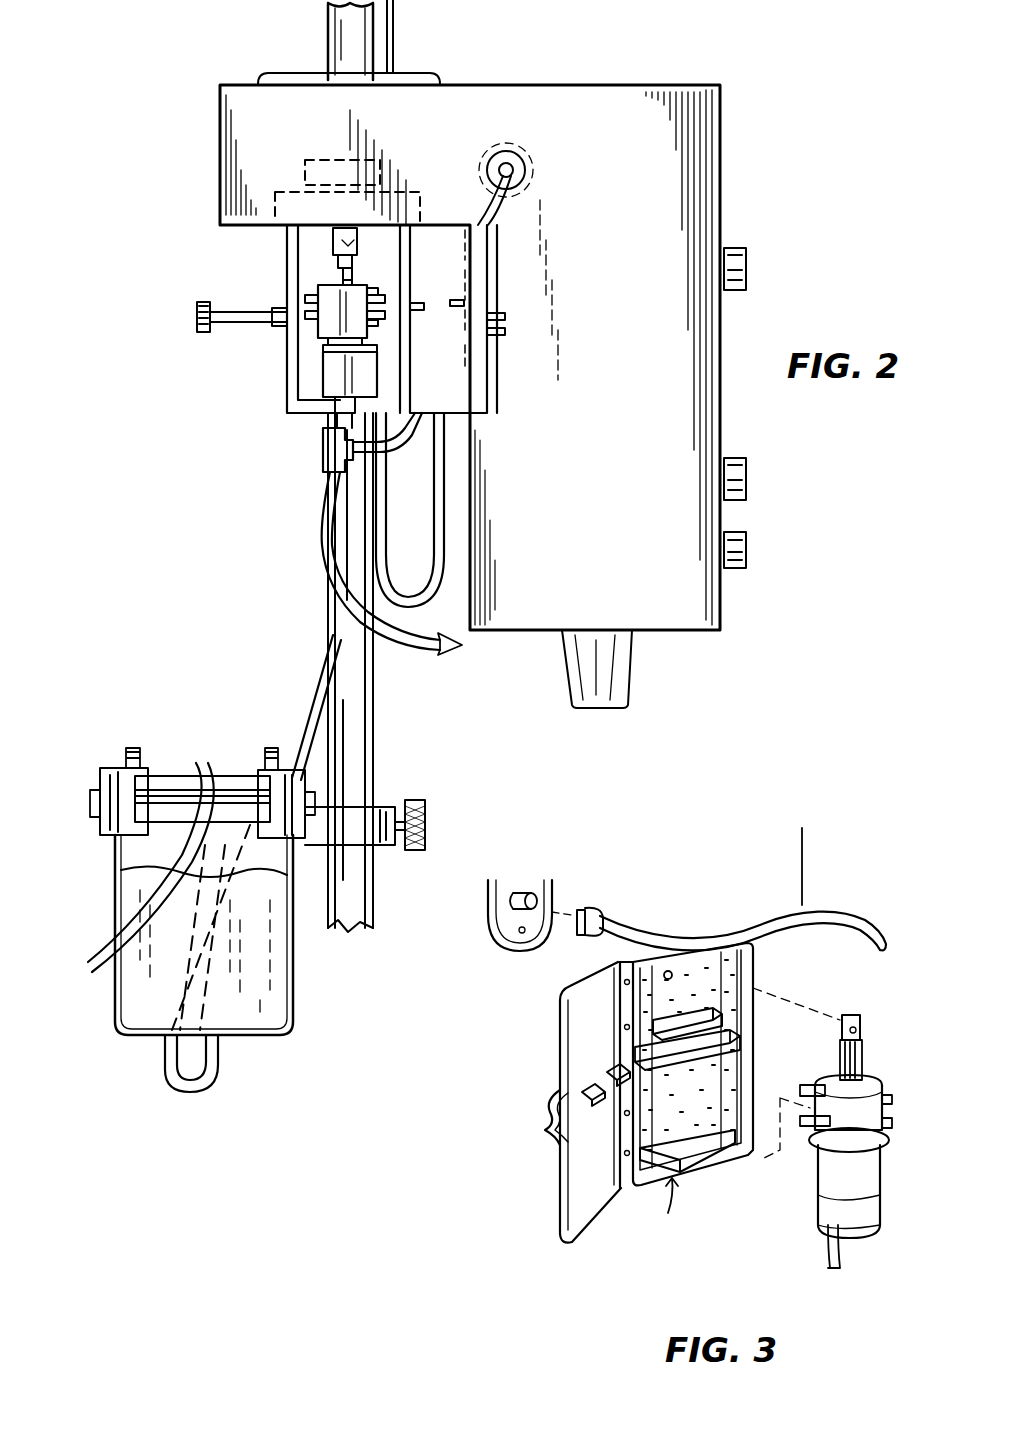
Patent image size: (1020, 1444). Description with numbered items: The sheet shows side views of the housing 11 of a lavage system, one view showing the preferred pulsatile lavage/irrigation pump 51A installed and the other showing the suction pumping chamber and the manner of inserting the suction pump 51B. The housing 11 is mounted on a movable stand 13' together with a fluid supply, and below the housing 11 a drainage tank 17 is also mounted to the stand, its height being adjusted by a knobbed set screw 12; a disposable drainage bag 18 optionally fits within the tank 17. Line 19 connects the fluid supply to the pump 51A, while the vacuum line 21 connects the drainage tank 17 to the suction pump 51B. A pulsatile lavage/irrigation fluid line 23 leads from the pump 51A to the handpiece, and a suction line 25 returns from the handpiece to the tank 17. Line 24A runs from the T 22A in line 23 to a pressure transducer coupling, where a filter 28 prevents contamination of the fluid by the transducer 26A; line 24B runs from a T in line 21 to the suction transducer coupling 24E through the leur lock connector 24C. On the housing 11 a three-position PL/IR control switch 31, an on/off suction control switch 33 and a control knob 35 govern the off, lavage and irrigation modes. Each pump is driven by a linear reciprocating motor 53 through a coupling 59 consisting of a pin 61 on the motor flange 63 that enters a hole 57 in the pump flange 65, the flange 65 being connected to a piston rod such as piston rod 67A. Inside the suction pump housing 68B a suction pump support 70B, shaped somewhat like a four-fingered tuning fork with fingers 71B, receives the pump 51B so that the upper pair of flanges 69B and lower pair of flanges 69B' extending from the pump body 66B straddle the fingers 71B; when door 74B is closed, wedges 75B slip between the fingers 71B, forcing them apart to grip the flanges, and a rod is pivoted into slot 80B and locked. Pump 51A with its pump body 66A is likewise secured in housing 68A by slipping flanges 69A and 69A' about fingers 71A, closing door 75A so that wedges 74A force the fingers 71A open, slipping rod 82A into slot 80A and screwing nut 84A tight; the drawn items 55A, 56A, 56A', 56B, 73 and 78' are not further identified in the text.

In FIG. 2, the housing 11 is at (730, 210).
In FIG. 2, the knobbed set screw 12 is at (427, 814).
In FIG. 2, the pole 13' is at (393, 467).
In FIG. 2, the drainage tank 17 is at (108, 1030).
In FIG. 2, the disposable drainage bag 18 is at (240, 1012).
In FIG. 2, the line 19 is at (410, 605).
In FIG. 2, the vacuum line 21 is at (325, 676).
In FIG. 2, the T 22A is at (335, 452).
In FIG. 2, the pulsatile lavage/irrigation fluid line 23 is at (420, 645).
In FIG. 2, the line 24A is at (400, 450).
In FIG. 3, the line 24B is at (850, 915).
In FIG. 3, the leur lock connector 24C is at (595, 905).
In FIG. 3, the suction transducer coupling 24E is at (522, 892).
In FIG. 2, the suction line 25 is at (140, 912).
In FIG. 2, the transducer 26A is at (520, 152).
In FIG. 2, the filter 28 is at (492, 160).
In FIG. 2, the PL/IR control switch 31 is at (748, 472).
In FIG. 2, the suction control switch 33 is at (748, 540).
In FIG. 2, the control knob 35 is at (748, 262).
In FIG. 2, the pulsatile lavage/irrigation pump 51A is at (302, 276).
In FIG. 3, the suction pump 51B is at (760, 1212).
In FIG. 2, the motor 53 is at (400, 175).
In FIG. 2, the coupling 55A is at (311, 348).
In FIG. 2, the outlet 56A is at (302, 428).
In FIG. 2, the outlet 56A' is at (481, 408).
In FIG. 3, the outlet 56B is at (658, 1207).
In FIG. 3, the hole 57 is at (860, 1038).
In FIG. 2, the coupling 59 is at (378, 257).
In FIG. 2, the pin 61 is at (356, 255).
In FIG. 3, the pin 61 is at (668, 968).
In FIG. 3, the motor flange 63 is at (650, 967).
In FIG. 3, the pump flange 65 is at (862, 1022).
In FIG. 2, the pump body 66A is at (332, 372).
In FIG. 3, the pump body 66B is at (878, 1168).
In FIG. 2, the piston rod 67A is at (355, 284).
In FIG. 2, the housing 68A is at (360, 406).
In FIG. 3, the suction pump housing 68B is at (740, 1155).
In FIG. 2, the flanges 69A is at (413, 288).
In FIG. 2, the flanges 69A' is at (396, 347).
In FIG. 3, the upper pair of flanges 69B is at (887, 1090).
In FIG. 3, the lower pair of flanges 69B' is at (886, 1123).
In FIG. 3, the suction pump support 70B is at (718, 1010).
In FIG. 2, the fingers 71A is at (312, 300).
In FIG. 3, the fingers 71B is at (740, 1042).
In FIG. 2, the tab 73 is at (378, 323).
In FIG. 2, the wedges 74A is at (482, 290).
In FIG. 3, the door 74B is at (590, 1208).
In FIG. 2, the door 75A is at (478, 248).
In FIG. 3, the wedges 75B is at (590, 1084).
In FIG. 2, the partition 78' is at (245, 234).
In FIG. 2, the slot 80A is at (507, 318).
In FIG. 3, the slot 80B is at (548, 1118).
In FIG. 2, the rod 82A is at (232, 325).
In FIG. 2, the nut 84A is at (204, 300).